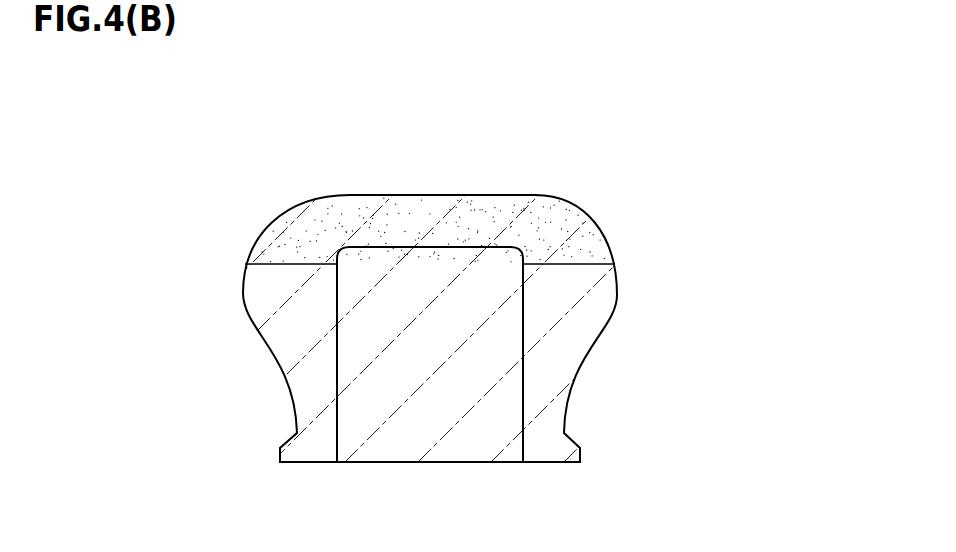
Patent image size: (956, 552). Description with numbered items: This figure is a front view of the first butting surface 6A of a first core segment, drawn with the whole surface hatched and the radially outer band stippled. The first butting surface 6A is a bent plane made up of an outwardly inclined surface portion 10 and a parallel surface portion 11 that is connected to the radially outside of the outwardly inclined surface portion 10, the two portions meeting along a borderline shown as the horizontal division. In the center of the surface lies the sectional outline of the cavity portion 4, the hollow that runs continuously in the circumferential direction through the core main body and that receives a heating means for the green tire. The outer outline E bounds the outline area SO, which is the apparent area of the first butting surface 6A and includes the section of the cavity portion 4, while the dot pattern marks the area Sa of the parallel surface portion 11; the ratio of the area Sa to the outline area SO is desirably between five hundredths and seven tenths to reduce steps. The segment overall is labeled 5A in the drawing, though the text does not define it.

The cavity portion 4 is at (439, 359).
The sealing member 5A is at (587, 175).
The first butting surface 6A is at (723, 141).
The outwardly inclined surface portion 10 is at (590, 317).
The parallel surface portion 11 is at (580, 244).
The area of the parallel surface portion Sa is at (323, 213).
The outline area SO is at (399, 432).
The outer outline E is at (250, 322).